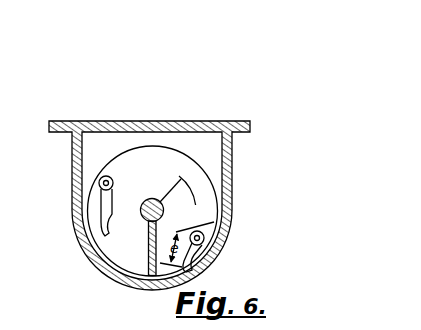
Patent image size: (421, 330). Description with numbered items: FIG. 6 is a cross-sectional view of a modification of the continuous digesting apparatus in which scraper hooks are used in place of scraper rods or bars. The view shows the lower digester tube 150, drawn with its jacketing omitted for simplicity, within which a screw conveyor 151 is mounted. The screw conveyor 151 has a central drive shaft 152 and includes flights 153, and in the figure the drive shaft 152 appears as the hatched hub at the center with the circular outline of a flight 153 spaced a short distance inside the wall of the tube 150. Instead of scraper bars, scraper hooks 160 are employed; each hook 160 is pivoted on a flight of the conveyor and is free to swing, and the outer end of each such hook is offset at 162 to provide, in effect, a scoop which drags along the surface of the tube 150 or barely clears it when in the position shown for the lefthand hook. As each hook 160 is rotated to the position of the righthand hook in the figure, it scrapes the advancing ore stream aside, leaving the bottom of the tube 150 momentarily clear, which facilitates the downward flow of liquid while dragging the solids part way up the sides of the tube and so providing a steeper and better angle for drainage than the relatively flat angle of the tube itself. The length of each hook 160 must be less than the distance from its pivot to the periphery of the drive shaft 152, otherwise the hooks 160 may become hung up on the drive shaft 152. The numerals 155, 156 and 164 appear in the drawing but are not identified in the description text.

The lower digester tube 150 is at (207, 157).
The screw conveyor 151 is at (95, 169).
The drive shaft 152 is at (187, 176).
The flights 153 is at (117, 159).
The housing bottom wall 155 is at (209, 256).
The pivoted weight arm 156 is at (211, 218).
The scraper hook 160 is at (147, 204).
The offset 162 is at (104, 234).
The pivot pin 164 is at (112, 180).